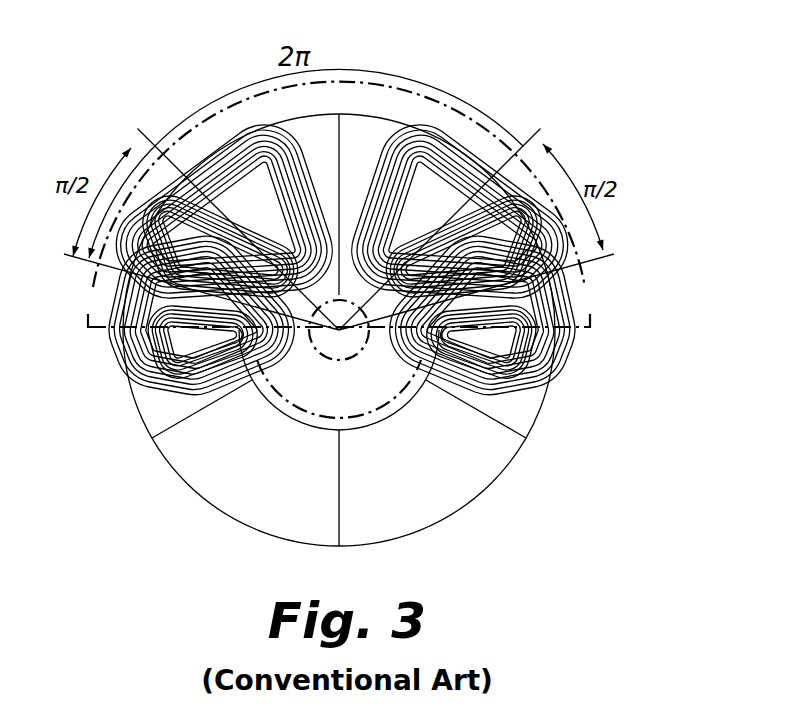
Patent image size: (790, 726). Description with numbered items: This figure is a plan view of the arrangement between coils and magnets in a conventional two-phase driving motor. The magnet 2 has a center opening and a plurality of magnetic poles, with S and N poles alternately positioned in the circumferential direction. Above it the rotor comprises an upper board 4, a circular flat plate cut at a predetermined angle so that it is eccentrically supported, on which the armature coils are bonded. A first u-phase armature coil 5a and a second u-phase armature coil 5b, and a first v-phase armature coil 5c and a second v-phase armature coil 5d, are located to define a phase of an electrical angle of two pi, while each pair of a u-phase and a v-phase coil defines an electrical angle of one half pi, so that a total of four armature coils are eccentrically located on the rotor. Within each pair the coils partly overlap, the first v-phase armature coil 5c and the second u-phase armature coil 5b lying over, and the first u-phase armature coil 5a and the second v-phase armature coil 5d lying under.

The magnet 2 is at (453, 487).
The upper board 4 is at (364, 102).
The first u-phase armature coil 5a is at (150, 368).
The second u-phase armature coil 5b is at (380, 135).
The first v-phase armature coil 5c is at (340, 203).
The second v-phase armature coil 5d is at (525, 445).